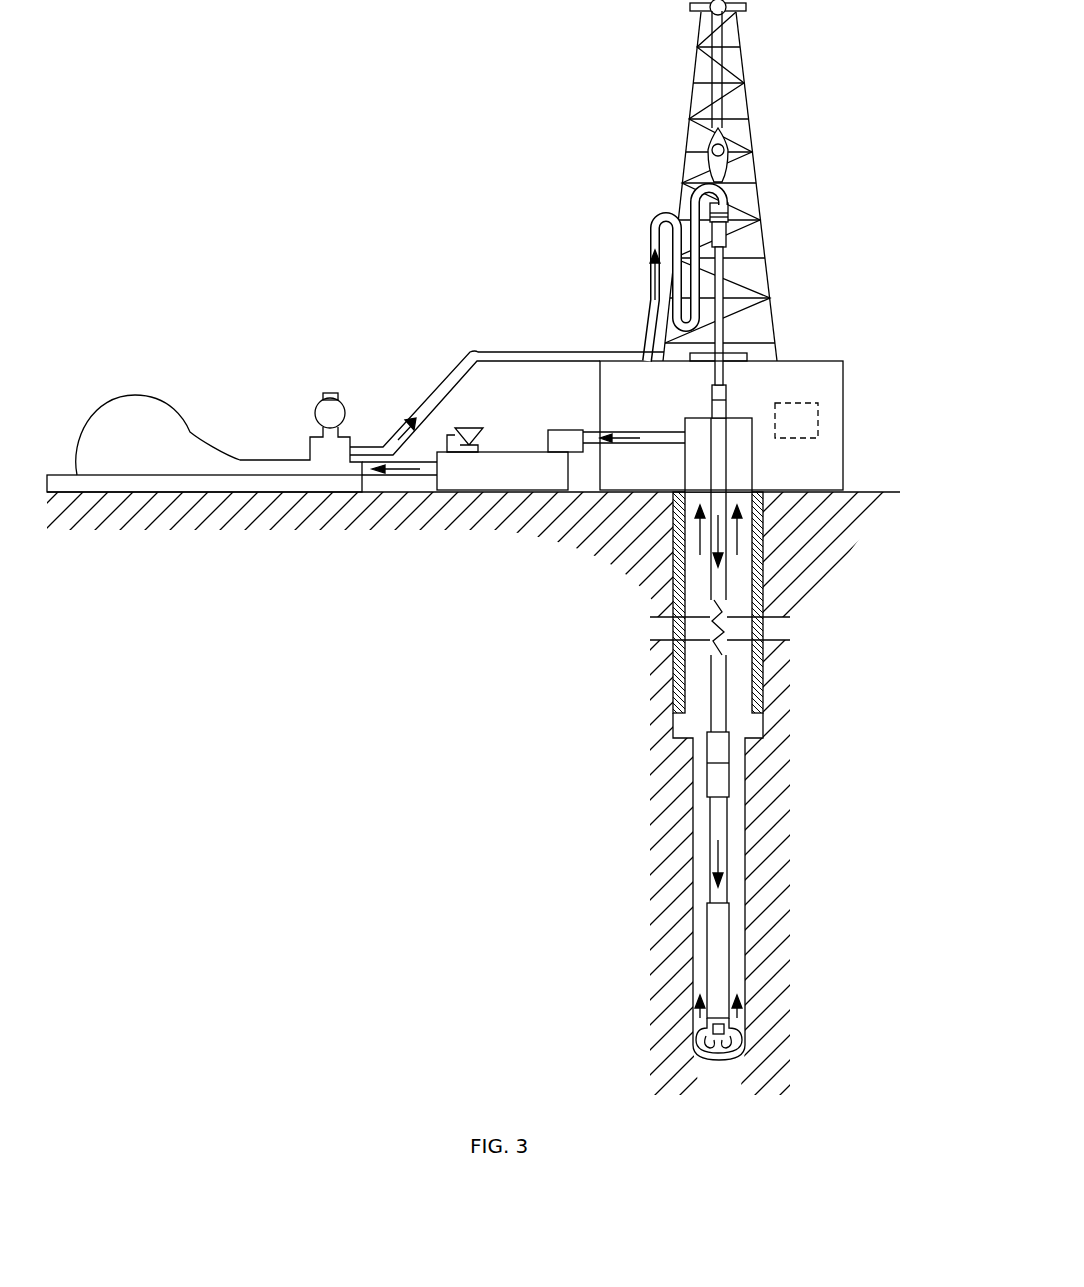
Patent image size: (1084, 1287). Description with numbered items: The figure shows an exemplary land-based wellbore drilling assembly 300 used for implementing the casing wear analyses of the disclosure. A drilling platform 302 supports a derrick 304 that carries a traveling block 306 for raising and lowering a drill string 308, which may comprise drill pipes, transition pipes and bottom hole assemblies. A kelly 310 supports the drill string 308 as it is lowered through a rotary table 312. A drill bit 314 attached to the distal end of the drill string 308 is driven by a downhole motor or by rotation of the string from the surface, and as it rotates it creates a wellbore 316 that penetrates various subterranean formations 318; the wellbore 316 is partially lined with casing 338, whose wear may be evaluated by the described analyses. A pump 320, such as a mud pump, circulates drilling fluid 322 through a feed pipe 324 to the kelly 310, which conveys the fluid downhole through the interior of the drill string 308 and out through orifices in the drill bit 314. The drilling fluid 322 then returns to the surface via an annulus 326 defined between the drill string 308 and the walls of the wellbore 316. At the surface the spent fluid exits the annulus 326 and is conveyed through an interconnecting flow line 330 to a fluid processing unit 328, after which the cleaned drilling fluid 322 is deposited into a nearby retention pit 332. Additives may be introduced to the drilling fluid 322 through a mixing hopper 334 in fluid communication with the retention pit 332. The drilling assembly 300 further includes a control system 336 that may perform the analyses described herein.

The wellbore drilling assembly 300 is at (433, 80).
The drilling platform 302 is at (847, 373).
The derrick 304 is at (748, 92).
The traveling block 306 is at (730, 136).
The drill string 308 is at (720, 585).
The kelly 310 is at (717, 268).
The rotary table 312 is at (743, 356).
The drill bit 314 is at (738, 1030).
The wellbore 316 is at (763, 690).
The subterranean formations 318 is at (580, 729).
The pump 320 is at (150, 452).
The drilling fluid 322 is at (392, 445).
The feed pipe 324 is at (470, 352).
The annulus 326 is at (733, 853).
The fluid processing unit 328 is at (568, 430).
The interconnecting flow line 330 is at (673, 443).
The retention pit 332 is at (520, 483).
The mixing hopper 334 is at (458, 445).
The control system 336 is at (815, 432).
The casing 338 is at (762, 545).